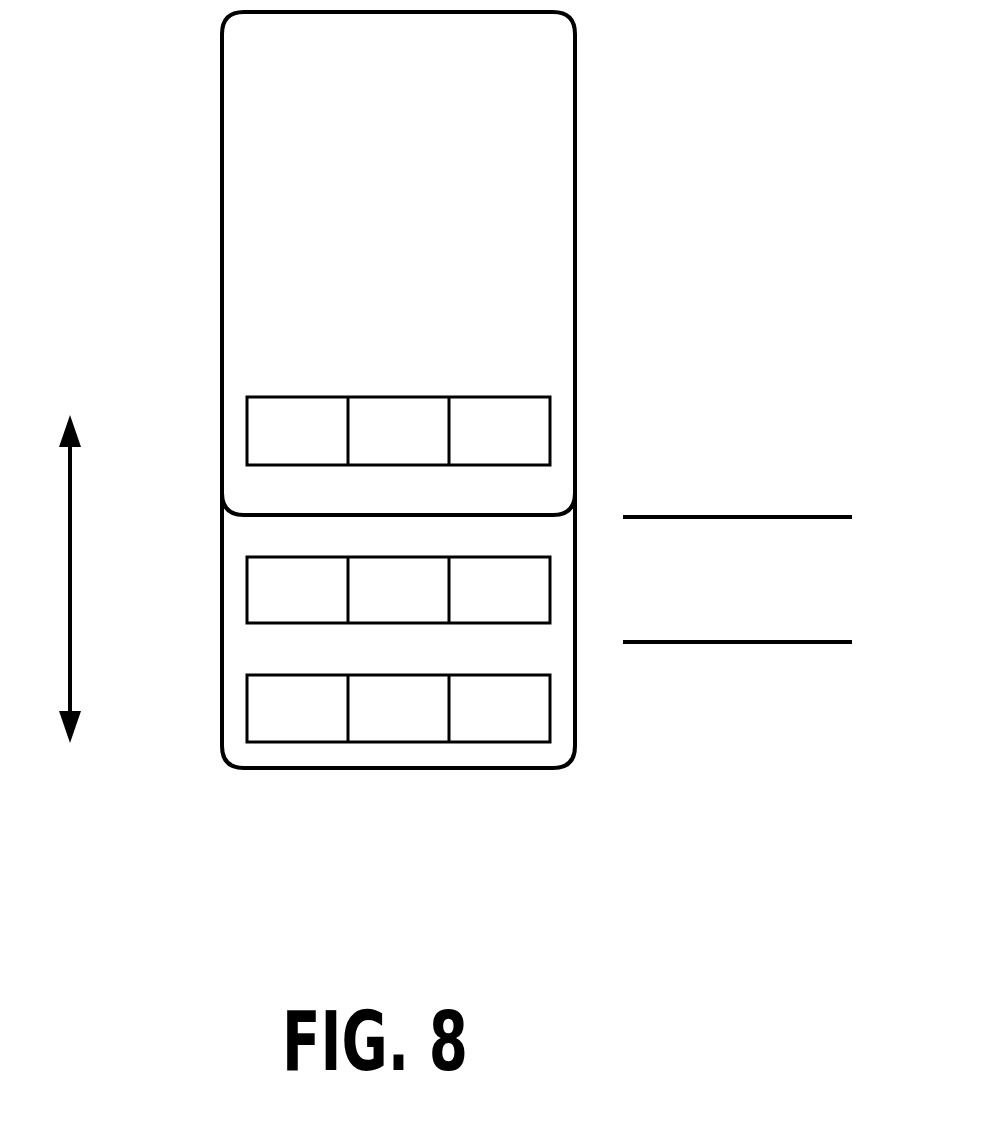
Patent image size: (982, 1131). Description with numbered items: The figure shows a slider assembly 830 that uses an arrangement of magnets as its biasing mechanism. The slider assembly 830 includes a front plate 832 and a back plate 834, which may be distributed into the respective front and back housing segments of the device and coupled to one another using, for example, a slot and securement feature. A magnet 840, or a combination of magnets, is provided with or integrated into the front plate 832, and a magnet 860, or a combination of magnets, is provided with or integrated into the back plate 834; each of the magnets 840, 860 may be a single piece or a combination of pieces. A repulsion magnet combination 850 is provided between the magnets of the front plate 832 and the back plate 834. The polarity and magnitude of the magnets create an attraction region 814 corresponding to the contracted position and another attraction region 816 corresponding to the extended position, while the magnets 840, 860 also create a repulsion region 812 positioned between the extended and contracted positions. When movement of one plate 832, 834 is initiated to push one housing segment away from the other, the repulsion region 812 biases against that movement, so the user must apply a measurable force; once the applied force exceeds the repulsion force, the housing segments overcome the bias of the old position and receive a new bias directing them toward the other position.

The slider assembly 830 is at (422, 461).
The front plate 832 is at (222, 163).
The back plate 834 is at (557, 766).
The magnet 840 is at (246, 423).
The repulsion magnet combination 850 is at (246, 592).
The magnet 860 is at (246, 707).
The repulsion region 812 is at (752, 591).
The attraction region 814 is at (738, 464).
The attraction region 816 is at (725, 715).